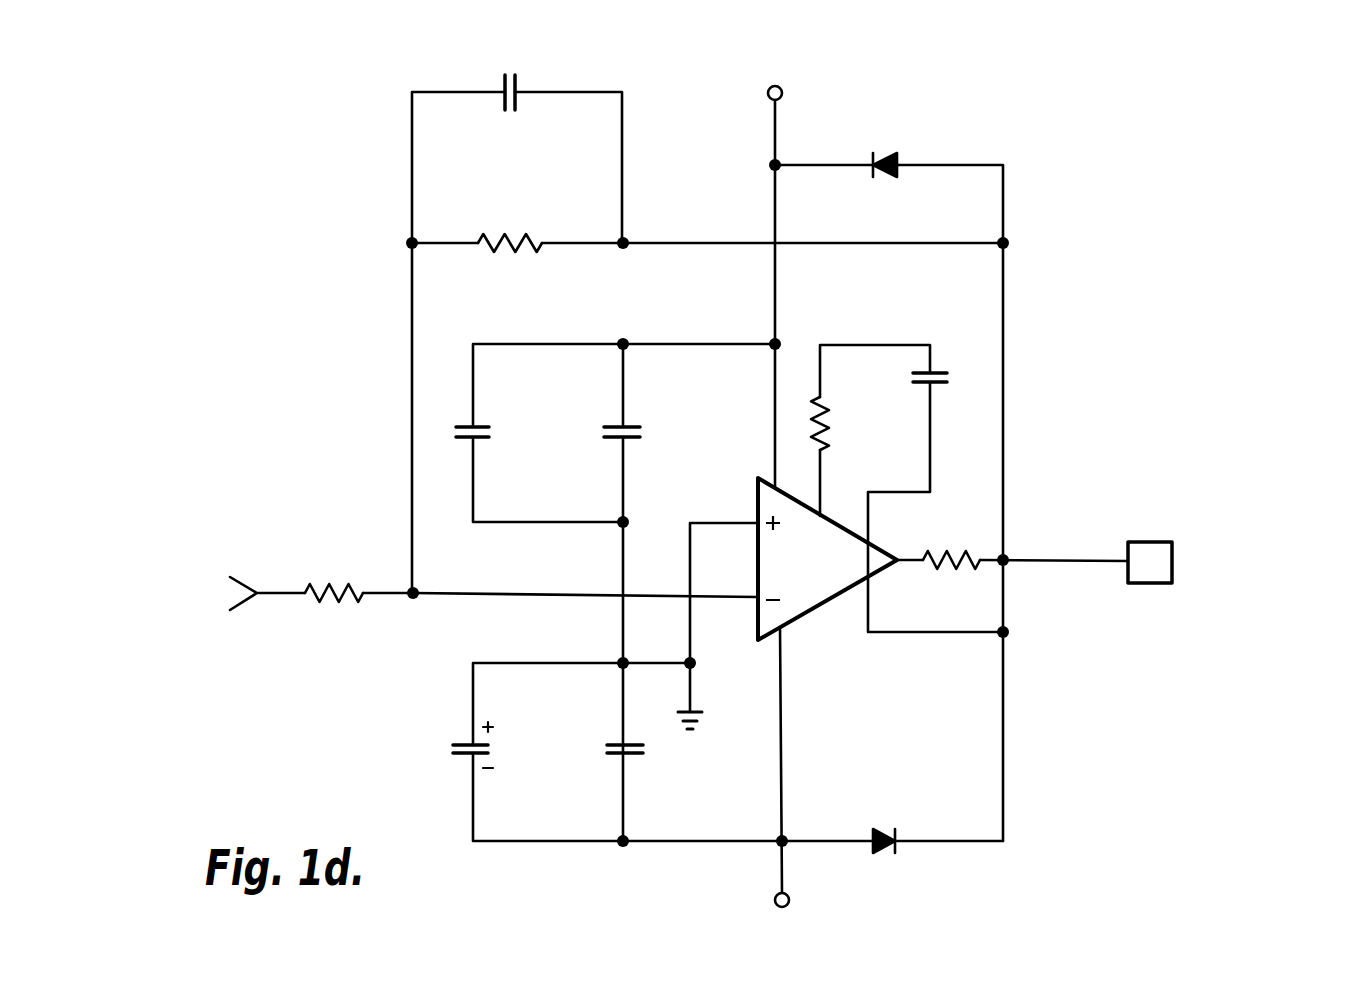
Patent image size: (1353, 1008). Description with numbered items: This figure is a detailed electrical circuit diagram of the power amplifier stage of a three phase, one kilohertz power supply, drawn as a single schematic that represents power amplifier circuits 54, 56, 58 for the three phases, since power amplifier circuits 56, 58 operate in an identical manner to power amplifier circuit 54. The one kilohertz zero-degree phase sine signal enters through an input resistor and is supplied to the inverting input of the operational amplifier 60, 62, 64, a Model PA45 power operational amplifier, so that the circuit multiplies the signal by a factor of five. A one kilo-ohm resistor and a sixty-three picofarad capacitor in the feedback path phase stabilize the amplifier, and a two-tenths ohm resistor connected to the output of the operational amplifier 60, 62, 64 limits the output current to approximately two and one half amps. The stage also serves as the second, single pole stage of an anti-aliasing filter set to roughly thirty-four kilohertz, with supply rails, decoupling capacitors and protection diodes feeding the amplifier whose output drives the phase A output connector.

The power amplifier circuit 54 is at (732, 486).
The power amplifier circuit 56 is at (732, 486).
The power amplifier circuit 58 is at (732, 486).
The operational amplifier 60 is at (869, 602).
The operational amplifier 62 is at (869, 602).
The operational amplifier 64 is at (797, 620).